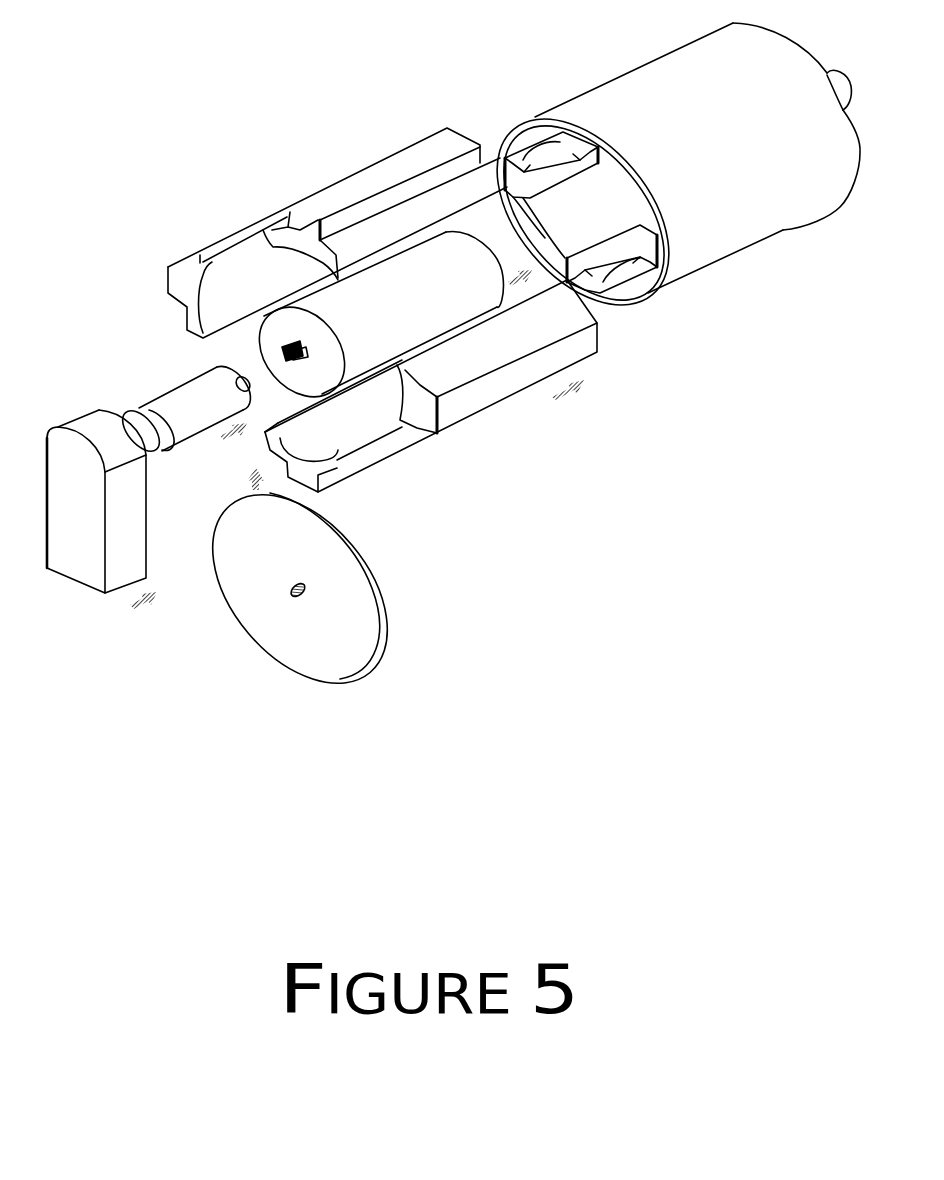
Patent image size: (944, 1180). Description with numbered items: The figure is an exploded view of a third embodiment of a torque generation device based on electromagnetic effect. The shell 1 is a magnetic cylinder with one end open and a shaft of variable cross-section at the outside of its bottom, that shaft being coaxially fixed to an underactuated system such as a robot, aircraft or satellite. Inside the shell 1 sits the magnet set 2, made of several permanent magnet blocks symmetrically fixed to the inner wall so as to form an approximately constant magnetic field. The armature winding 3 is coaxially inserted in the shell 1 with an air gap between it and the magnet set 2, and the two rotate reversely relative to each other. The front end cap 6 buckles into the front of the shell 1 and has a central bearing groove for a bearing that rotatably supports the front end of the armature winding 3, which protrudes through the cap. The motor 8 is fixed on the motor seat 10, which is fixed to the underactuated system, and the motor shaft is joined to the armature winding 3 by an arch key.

The shell 1 is at (703, 128).
The magnet set 2 is at (510, 384).
The armature winding 3 is at (268, 346).
The front end cap 6 is at (336, 622).
The motor 8 is at (177, 420).
The motor seat 10 is at (119, 557).